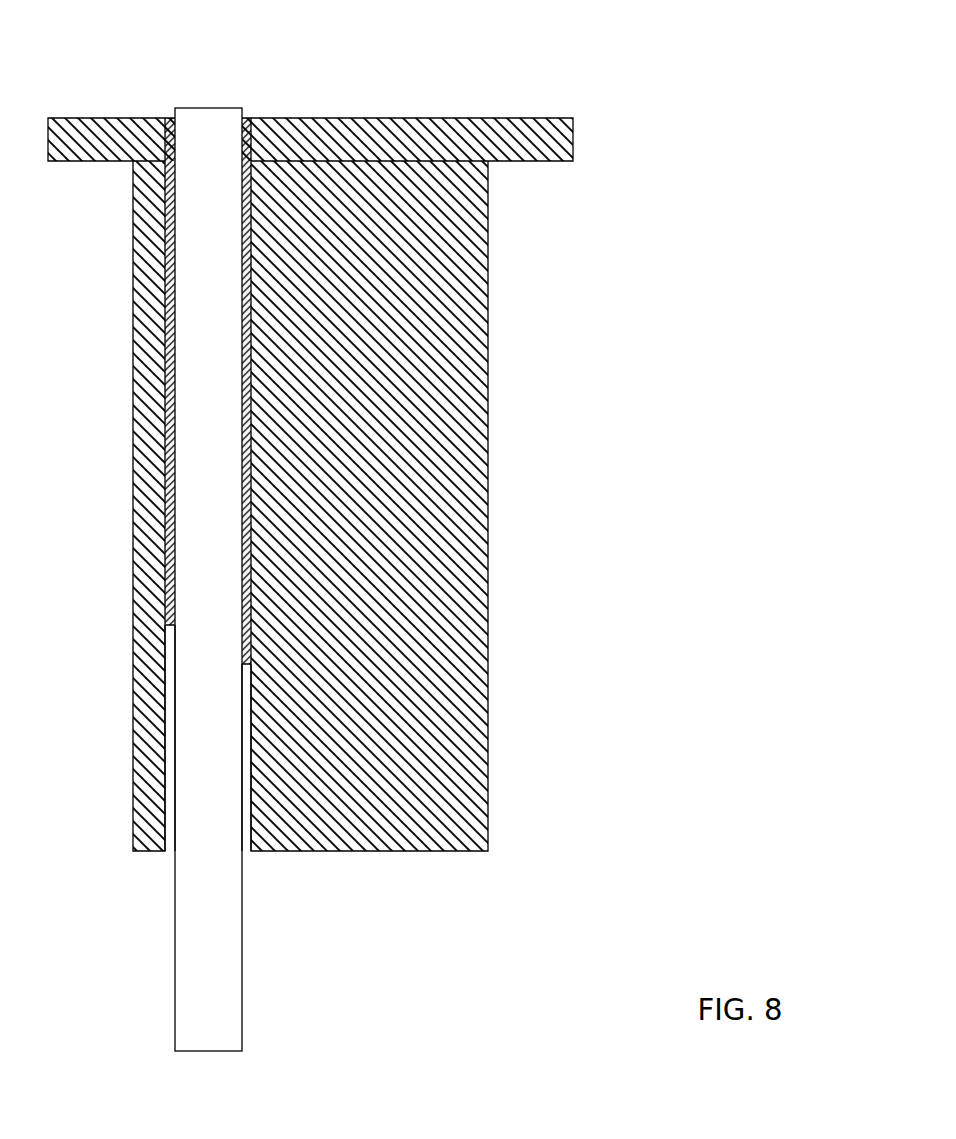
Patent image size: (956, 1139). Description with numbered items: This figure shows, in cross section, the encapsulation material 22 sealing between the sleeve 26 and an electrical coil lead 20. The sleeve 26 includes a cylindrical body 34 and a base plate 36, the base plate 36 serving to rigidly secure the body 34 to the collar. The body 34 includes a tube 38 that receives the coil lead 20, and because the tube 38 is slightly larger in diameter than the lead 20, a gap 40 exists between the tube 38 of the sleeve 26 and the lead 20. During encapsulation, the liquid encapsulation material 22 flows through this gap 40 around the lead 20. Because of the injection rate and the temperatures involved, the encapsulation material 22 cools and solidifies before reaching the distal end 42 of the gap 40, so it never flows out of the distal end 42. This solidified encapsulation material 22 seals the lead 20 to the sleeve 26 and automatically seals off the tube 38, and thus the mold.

The coil lead 20 is at (225, 923).
The encapsulation material 22 is at (168, 122).
The sleeve 26 is at (772, 248).
The cylindrical body 34 is at (477, 653).
The base plate 36 is at (573, 161).
The tube 38 is at (171, 650).
The gap 40 is at (245, 823).
The distal end 42 is at (165, 876).